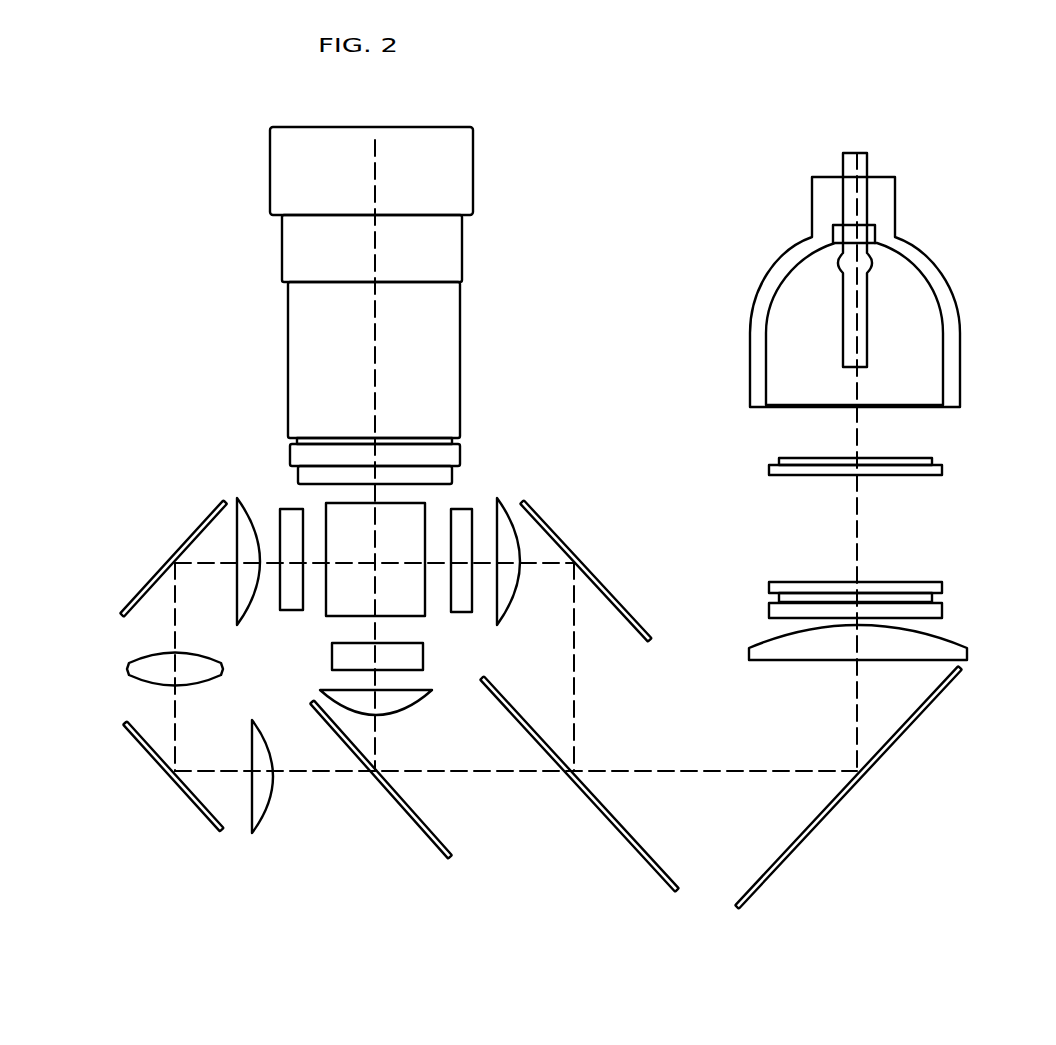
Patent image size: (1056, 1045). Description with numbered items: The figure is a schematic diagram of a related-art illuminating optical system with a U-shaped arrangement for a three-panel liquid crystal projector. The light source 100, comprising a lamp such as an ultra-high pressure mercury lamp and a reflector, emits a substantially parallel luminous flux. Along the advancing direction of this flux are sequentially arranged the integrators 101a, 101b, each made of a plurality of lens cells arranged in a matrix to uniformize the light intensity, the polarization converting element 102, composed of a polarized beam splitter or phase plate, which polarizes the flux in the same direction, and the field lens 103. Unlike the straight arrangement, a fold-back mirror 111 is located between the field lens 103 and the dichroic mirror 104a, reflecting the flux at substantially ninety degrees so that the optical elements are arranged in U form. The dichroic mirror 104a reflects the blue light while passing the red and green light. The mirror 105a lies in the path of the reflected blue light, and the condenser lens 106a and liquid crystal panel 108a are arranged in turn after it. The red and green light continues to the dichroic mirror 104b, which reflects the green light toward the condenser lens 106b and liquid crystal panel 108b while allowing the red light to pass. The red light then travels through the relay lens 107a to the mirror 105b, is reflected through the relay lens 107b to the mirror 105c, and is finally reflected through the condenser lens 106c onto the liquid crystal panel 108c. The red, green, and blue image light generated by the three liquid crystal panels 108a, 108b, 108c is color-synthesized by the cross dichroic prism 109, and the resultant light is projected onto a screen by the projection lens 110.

The light source 100 is at (930, 262).
The integrator 101a is at (942, 468).
The integrator 101b is at (942, 590).
The polarization converting element 102 is at (942, 610).
The field lens 103 is at (967, 657).
The dichroic mirror 104a is at (625, 840).
The dichroic mirror 104b is at (446, 860).
The mirror 105a is at (560, 538).
The mirror 105b is at (193, 803).
The mirror 105c is at (173, 563).
The condenser lens 106a is at (501, 500).
The condenser lens 106b is at (403, 714).
The condenser lens 106c is at (235, 496).
The relay lens 107a is at (262, 832).
The relay lens 107b is at (128, 669).
The liquid crystal panel 108a is at (467, 508).
The liquid crystal panel 108b is at (424, 660).
The liquid crystal panel 108c is at (290, 507).
The cross dichroic prism 109 is at (412, 617).
The projection lens 110 is at (460, 319).
The fold-back mirror 111 is at (870, 766).